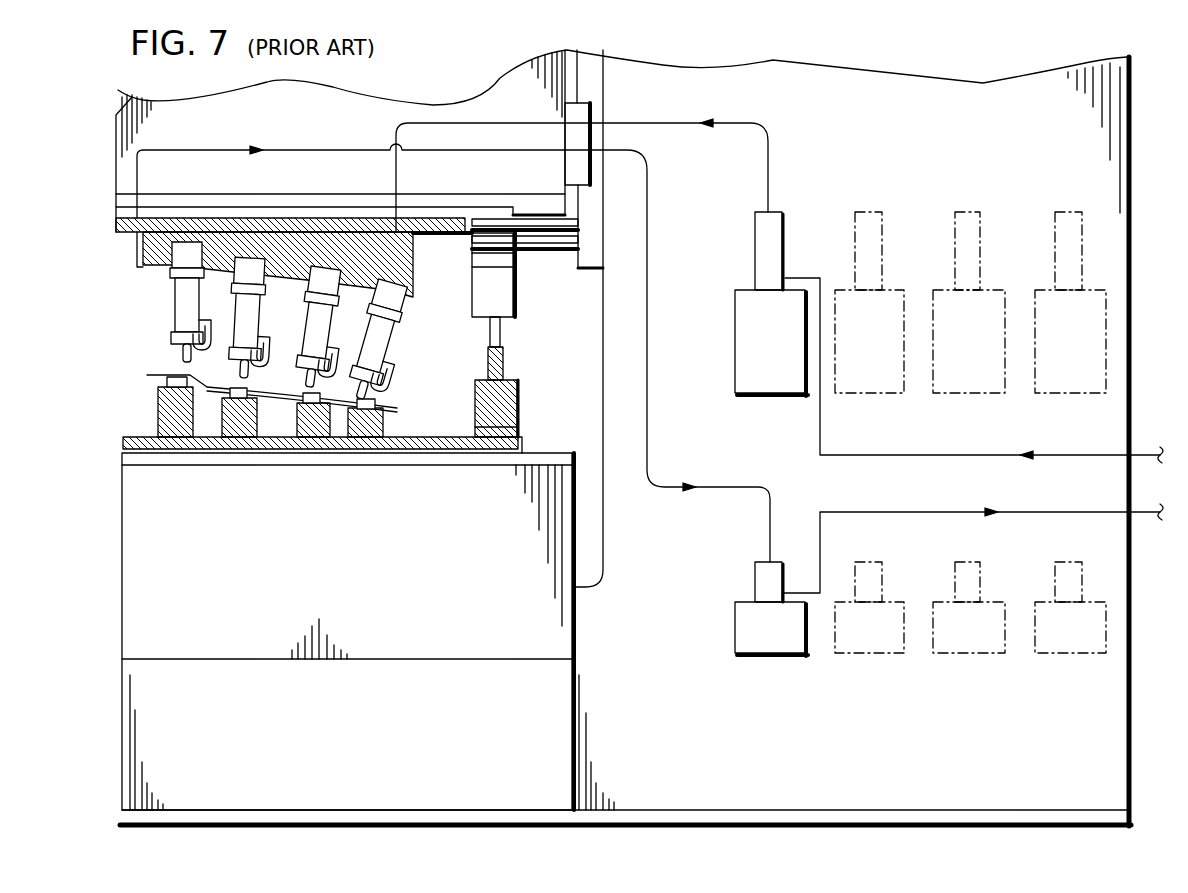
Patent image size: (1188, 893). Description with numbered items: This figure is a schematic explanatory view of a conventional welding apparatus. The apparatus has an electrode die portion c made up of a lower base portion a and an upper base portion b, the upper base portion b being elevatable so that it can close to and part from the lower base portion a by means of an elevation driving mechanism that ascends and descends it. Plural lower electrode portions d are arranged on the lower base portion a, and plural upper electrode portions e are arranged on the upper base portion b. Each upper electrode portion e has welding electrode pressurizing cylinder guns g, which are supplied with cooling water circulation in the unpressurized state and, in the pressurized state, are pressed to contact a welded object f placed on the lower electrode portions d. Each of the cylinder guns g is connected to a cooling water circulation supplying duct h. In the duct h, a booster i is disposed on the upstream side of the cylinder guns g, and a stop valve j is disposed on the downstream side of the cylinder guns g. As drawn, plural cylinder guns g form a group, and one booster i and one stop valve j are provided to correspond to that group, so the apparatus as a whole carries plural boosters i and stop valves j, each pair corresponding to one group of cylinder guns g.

The lower base portion a is at (116, 447).
The upper base portion b is at (114, 225).
The electrode die portion c is at (105, 195).
The lower electrode portion d is at (220, 418).
The upper electrode portion e is at (413, 270).
The welded object f is at (396, 407).
The cylinder gun g is at (228, 306).
The cooling water circulation supplying duct h is at (1143, 448).
The booster i is at (780, 212).
The stop valve j is at (775, 666).